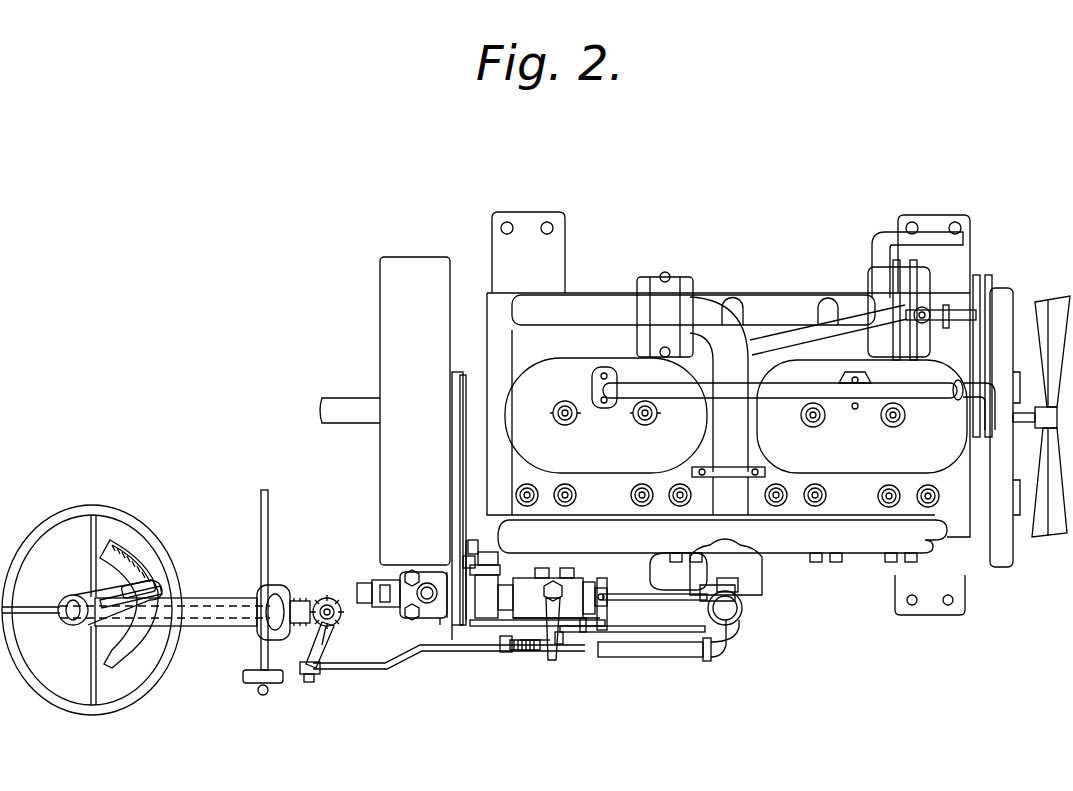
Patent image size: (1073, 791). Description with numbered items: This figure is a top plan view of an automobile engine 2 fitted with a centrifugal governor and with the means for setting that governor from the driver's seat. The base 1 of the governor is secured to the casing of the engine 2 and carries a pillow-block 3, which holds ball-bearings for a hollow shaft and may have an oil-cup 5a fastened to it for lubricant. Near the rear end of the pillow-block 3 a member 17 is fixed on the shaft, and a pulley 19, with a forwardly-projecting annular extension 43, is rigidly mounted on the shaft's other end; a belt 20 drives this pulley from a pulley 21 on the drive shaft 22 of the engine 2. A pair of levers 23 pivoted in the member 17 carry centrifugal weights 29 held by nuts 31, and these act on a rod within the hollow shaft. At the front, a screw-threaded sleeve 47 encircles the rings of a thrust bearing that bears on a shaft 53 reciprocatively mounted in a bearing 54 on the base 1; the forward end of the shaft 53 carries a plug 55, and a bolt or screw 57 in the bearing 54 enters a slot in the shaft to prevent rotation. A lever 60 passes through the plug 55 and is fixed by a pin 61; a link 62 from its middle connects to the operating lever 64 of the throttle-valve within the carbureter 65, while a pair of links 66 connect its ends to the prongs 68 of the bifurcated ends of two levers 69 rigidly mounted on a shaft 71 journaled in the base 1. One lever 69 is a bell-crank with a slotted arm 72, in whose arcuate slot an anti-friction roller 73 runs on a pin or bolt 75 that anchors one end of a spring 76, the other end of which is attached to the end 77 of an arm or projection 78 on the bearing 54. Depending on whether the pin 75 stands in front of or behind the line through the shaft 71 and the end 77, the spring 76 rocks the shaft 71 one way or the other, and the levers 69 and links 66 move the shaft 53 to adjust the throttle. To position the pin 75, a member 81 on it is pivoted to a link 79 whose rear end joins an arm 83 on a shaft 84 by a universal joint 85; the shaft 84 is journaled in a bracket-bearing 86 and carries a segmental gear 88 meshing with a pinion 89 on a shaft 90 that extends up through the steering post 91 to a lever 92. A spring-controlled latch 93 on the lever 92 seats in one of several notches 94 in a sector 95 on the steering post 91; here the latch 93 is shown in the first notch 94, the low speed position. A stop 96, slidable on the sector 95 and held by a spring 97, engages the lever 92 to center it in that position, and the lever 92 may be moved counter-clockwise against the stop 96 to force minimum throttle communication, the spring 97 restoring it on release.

The base 1 is at (437, 618).
The engine 2 is at (862, 416).
The pillow-block 3 is at (423, 595).
The oil-cup 5a is at (427, 585).
The member 17 is at (363, 605).
The pulley 19 is at (447, 620).
The belt 20 is at (452, 412).
The pulley 21 is at (461, 375).
The drive shaft 22 is at (345, 408).
The lever 23 is at (430, 574).
The centrifugal weight 29 is at (466, 560).
The nut 31 is at (386, 605).
The annular extension 43 is at (470, 556).
The sleeve 47 is at (490, 572).
The shaft 53 is at (487, 600).
The bearing 54 is at (560, 596).
The plug 55 is at (655, 566).
The bolt or screw 57 is at (582, 633).
The lever 60 is at (610, 604).
The pin 61 is at (604, 588).
The link 62 is at (690, 600).
The operating lever 64 is at (738, 618).
The carbureter 65 is at (760, 570).
The link 66 is at (650, 657).
The prong 68 is at (486, 552).
The lever 69 is at (462, 545).
The shaft 71 is at (520, 618).
The slotted arm 72 is at (604, 634).
The anti-friction roller 73 is at (545, 570).
The pin or bolt 75 is at (548, 606).
The spring 76 is at (532, 652).
The end 77 is at (550, 662).
The arm or projection 78 is at (560, 645).
The link 79 is at (378, 670).
The member 81 is at (508, 653).
The arm 83 is at (318, 645).
The shaft 84 is at (333, 610).
The universal joint 85 is at (316, 675).
The bracket-bearing 86 is at (315, 600).
The segmental gear 88 is at (327, 604).
The pinion 89 is at (292, 600).
The shaft 90 is at (236, 618).
The steering post 91 is at (206, 599).
The lever 92 is at (90, 595).
The spring-controlled latch 93 is at (150, 595).
The notch 94 is at (140, 631).
The sector 95 is at (100, 654).
The stop 96 is at (150, 583).
The spring 97 is at (118, 554).